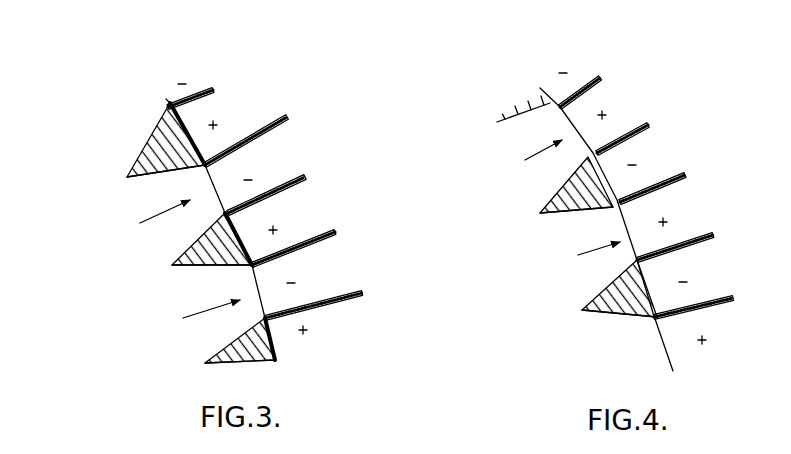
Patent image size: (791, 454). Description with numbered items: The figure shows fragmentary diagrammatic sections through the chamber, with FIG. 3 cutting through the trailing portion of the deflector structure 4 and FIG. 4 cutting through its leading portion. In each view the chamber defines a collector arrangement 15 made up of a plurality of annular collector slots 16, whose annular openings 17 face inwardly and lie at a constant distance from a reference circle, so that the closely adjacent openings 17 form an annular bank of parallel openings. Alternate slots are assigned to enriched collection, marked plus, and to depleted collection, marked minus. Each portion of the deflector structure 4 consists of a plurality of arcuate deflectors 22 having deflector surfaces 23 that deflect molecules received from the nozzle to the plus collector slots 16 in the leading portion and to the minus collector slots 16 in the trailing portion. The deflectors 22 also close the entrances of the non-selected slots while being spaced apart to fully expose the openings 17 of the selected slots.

In FIG. 3, the deflector structure 4 is at (120, 142).
In FIG. 3, the collector arrangement 15 is at (307, 363).
In FIG. 4, the collector arrangement 15 is at (547, 62).
In FIG. 3, the collector slots 16 is at (200, 112).
In FIG. 4, the collector slots 16 is at (590, 103).
In FIG. 3, the openings 17 is at (174, 269).
In FIG. 4, the openings 17 is at (556, 211).
In FIG. 3, the arcuate deflectors 22 is at (167, 263).
In FIG. 4, the arcuate deflectors 22 is at (550, 197).
In FIG. 3, the deflector surfaces 23 is at (147, 140).
In FIG. 4, the deflector surfaces 23 is at (512, 127).